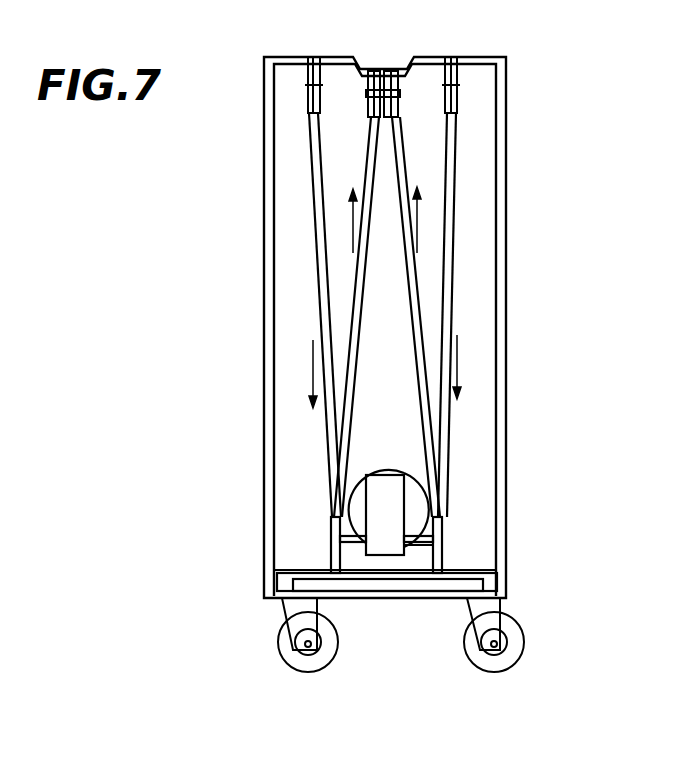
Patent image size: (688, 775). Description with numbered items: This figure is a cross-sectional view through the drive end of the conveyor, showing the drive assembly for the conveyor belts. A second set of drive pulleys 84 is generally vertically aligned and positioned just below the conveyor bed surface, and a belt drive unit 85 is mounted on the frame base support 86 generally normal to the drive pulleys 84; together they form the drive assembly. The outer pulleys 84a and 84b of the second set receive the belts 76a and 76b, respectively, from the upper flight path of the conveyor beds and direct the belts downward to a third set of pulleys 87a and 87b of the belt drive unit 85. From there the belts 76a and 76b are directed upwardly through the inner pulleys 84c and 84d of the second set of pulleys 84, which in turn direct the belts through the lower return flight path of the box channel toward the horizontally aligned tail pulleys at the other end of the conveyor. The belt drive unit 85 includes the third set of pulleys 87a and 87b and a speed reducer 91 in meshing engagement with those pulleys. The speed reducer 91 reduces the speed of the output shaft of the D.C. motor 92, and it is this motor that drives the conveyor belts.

The second set of drive pulleys 84 is at (306, 80).
The outer pulley 84a is at (457, 58).
The outer pulley 84b is at (310, 60).
The inner pulley 84c is at (388, 70).
The inner pulley 84d is at (374, 70).
The belt 76a is at (404, 163).
The belt 76b is at (315, 263).
The D.C. motor 92 is at (375, 470).
The belt drive unit 85 is at (446, 546).
The third set pulley 87a is at (442, 525).
The third set pulley 87b is at (331, 527).
The frame base support 86 is at (290, 580).
The speed reducer 91 is at (423, 545).